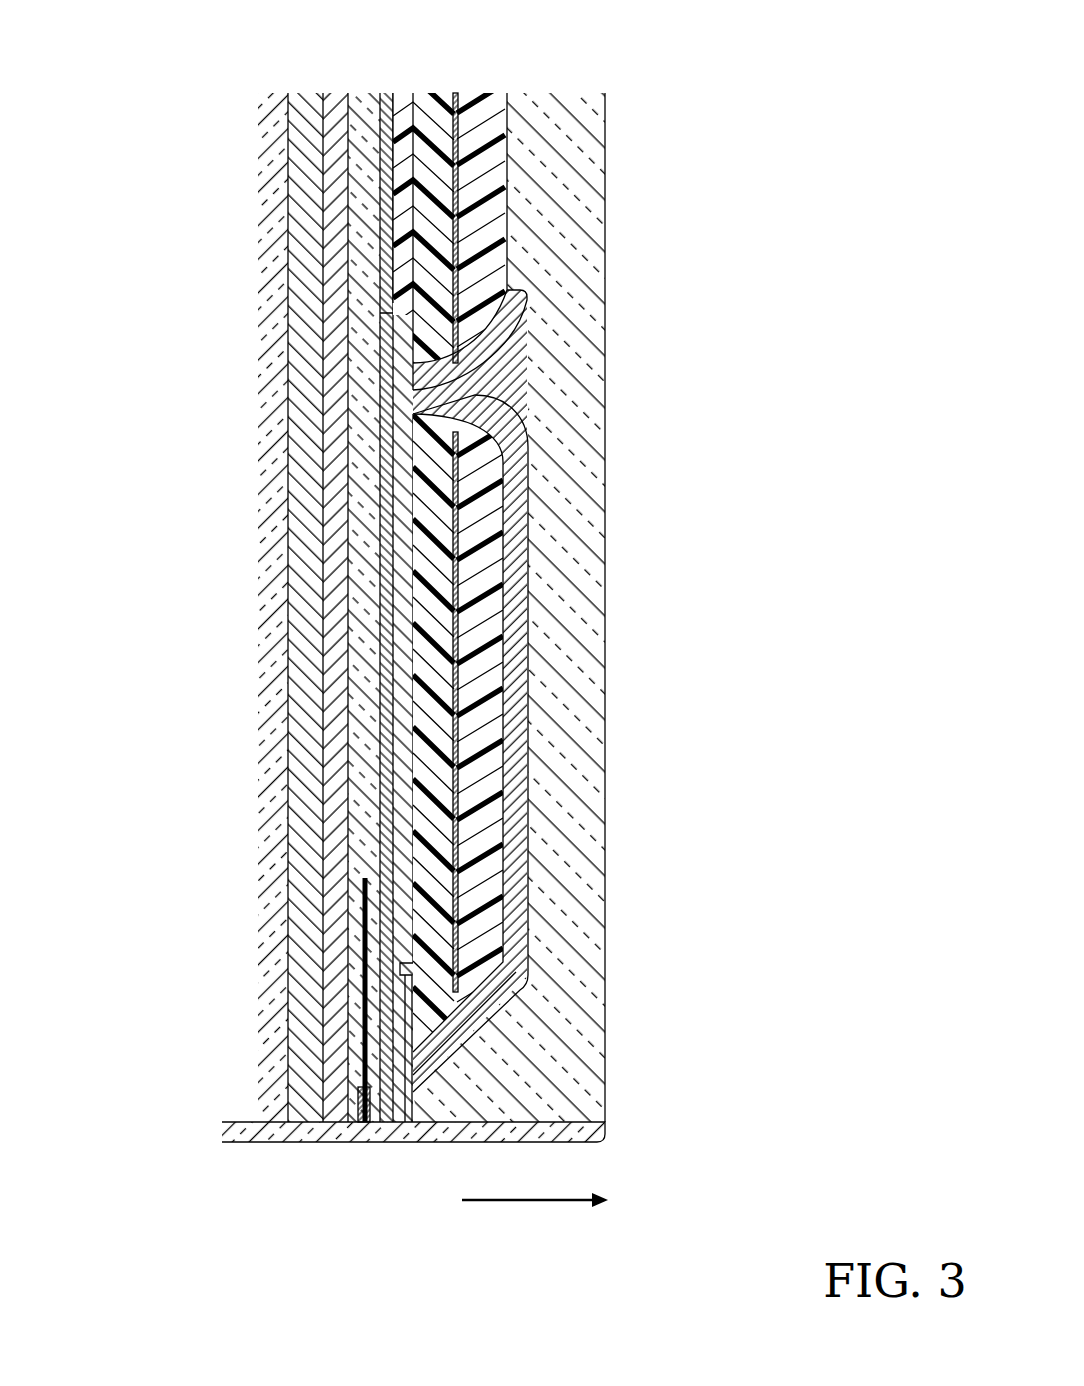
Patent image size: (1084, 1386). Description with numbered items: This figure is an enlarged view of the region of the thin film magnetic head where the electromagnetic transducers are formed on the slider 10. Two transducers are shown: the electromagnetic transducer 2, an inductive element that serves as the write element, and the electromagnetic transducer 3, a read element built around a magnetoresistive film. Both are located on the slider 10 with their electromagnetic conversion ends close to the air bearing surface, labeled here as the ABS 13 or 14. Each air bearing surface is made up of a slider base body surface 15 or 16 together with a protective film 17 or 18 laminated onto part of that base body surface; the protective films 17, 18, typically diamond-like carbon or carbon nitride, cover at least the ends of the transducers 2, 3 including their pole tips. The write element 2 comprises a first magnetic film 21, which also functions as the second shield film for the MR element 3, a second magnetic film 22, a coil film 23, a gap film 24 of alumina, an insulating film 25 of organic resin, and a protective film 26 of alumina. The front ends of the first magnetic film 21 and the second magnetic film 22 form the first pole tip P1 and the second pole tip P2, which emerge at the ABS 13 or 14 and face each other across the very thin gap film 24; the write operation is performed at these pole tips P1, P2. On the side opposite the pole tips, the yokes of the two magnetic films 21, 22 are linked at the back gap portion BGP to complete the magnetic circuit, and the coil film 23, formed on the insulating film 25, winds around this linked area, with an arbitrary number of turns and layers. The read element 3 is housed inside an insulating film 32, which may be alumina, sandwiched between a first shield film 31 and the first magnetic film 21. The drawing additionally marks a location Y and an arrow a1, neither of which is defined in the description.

The slider 10 is at (277, 80).
The electromagnetic transducer 2 is at (512, 1018).
The electromagnetic transducer 3 is at (360, 1090).
The ABS 13 is at (183, 650).
The ABS 14 is at (262, 1150).
The slider base body surface 15 is at (481, 1153).
The slider base body surface 16 is at (555, 1125).
The protective film 17 is at (658, 1123).
The protective film 18 is at (603, 1130).
The first magnetic film 21 is at (392, 508).
The second magnetic film 22 is at (515, 580).
The coil film 23 is at (455, 852).
The gap film 24 is at (411, 447).
The insulating film 25 is at (593, 552).
The protective film 26 is at (550, 410).
The first shield film 31 is at (342, 712).
The insulating film 32 is at (365, 600).
The gap position Y is at (410, 392).
The back gap BGP is at (460, 383).
The first pole tip P1 is at (388, 1113).
The second pole tip P2 is at (413, 1118).
The direction a1 is at (535, 1232).